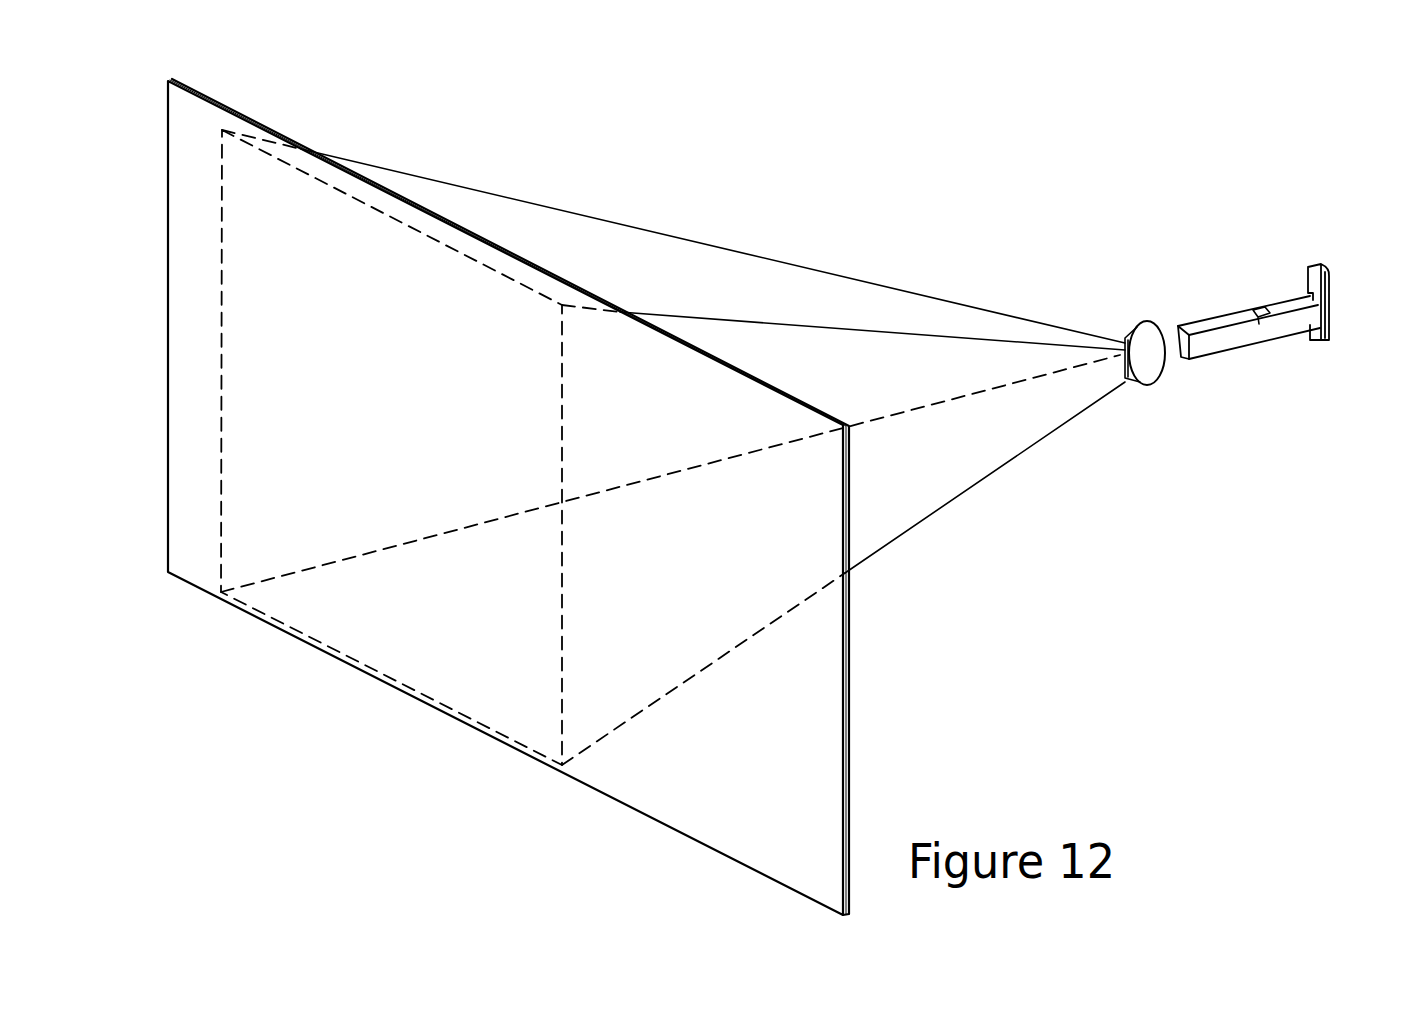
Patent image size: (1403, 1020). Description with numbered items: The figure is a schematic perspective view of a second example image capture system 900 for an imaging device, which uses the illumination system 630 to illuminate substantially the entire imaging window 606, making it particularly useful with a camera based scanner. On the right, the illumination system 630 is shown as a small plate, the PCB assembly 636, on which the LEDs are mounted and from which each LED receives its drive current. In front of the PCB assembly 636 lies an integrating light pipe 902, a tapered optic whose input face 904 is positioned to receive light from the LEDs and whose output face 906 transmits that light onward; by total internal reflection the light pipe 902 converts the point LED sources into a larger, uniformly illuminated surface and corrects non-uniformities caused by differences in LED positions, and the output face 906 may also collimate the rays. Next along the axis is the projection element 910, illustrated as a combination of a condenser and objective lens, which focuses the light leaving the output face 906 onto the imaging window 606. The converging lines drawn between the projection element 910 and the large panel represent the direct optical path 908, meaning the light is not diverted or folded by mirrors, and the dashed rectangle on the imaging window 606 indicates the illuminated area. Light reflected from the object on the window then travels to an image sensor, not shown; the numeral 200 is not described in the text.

The display system 200 is at (1087, 620).
The imaging window 606 is at (848, 705).
The illumination system 630 is at (1340, 285).
The PCB assembly 636 is at (1333, 288).
The image capture system 900 is at (1184, 280).
The integrating light pipe 902 is at (1244, 339).
The input face 904 is at (1330, 340).
The output face 906 is at (1182, 360).
The optical path 908 is at (620, 224).
The projection element 910 is at (1150, 320).